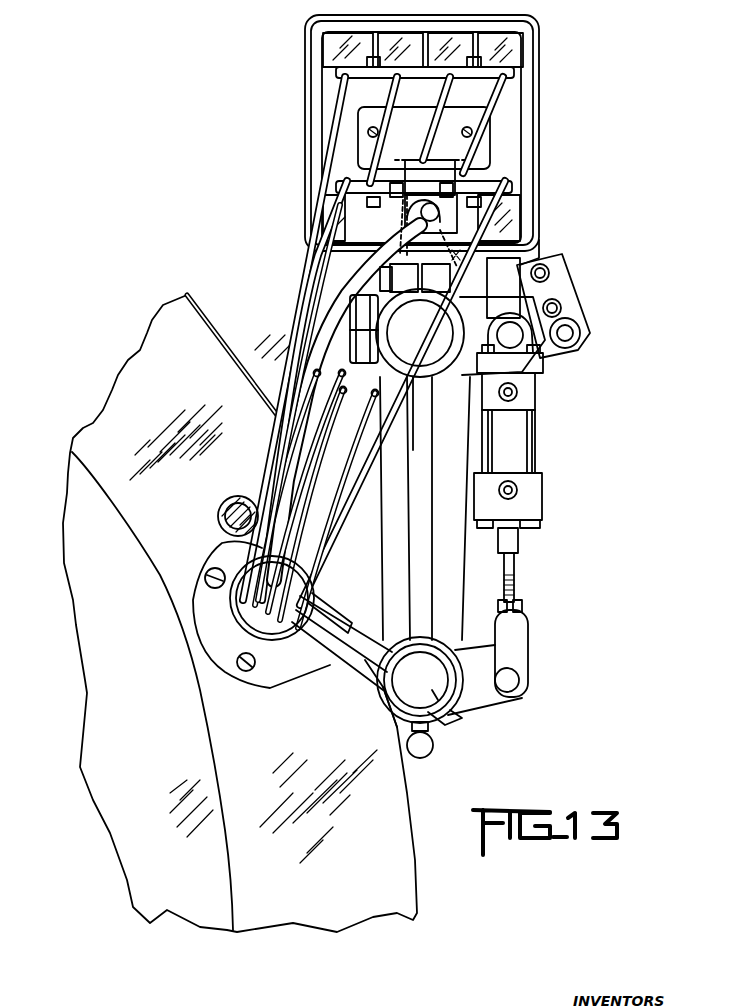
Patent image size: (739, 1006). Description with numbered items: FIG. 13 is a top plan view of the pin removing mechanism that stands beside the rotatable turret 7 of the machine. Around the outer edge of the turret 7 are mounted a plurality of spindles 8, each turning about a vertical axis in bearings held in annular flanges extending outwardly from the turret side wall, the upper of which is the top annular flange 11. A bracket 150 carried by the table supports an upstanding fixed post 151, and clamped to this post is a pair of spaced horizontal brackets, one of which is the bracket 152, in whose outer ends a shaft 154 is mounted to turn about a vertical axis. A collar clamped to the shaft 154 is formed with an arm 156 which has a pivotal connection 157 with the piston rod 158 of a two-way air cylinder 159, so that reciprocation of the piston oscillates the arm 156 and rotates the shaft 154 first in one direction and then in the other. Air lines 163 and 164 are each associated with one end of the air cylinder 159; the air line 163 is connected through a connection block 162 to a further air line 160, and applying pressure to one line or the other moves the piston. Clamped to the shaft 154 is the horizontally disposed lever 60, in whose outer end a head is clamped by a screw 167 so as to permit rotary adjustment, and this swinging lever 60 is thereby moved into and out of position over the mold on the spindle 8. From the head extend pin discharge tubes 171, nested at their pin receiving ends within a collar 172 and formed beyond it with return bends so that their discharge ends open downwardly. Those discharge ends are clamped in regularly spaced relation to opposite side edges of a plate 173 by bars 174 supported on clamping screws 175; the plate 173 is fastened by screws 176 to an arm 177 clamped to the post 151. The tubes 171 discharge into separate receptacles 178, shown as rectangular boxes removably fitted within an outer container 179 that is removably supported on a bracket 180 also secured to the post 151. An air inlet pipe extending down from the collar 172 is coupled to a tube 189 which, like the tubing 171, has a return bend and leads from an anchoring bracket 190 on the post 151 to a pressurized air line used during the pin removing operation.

The turret 7 is at (64, 535).
The spindle 8 is at (283, 670).
The top annular flange 11 is at (405, 806).
The lever 60 is at (375, 693).
The bracket 150 is at (241, 345).
The fixed post 151 is at (440, 355).
The bracket 152 is at (447, 583).
The shaft 154 is at (443, 728).
The arm 156 is at (490, 704).
The pivotal connection 157 is at (510, 679).
The piston rod 158 is at (512, 569).
The air cylinder 159 is at (508, 456).
The air line 160 is at (560, 320).
The connection block 162 is at (562, 300).
The air line 163 is at (578, 330).
The air line 164 is at (552, 274).
The screw 167 is at (325, 600).
The pin discharge tubing 171 is at (295, 447).
The collar 172 is at (298, 655).
The plate 173 is at (505, 163).
The bars 174 is at (512, 74).
The clamping screws 175 is at (490, 62).
The screws 176 is at (402, 341).
The arm 177 is at (327, 338).
The receptacles 178 is at (443, 38).
The outer container 179 is at (421, 30).
The bracket 180 is at (540, 246).
The tube 189 is at (290, 362).
The anchoring bracket 190 is at (430, 233).